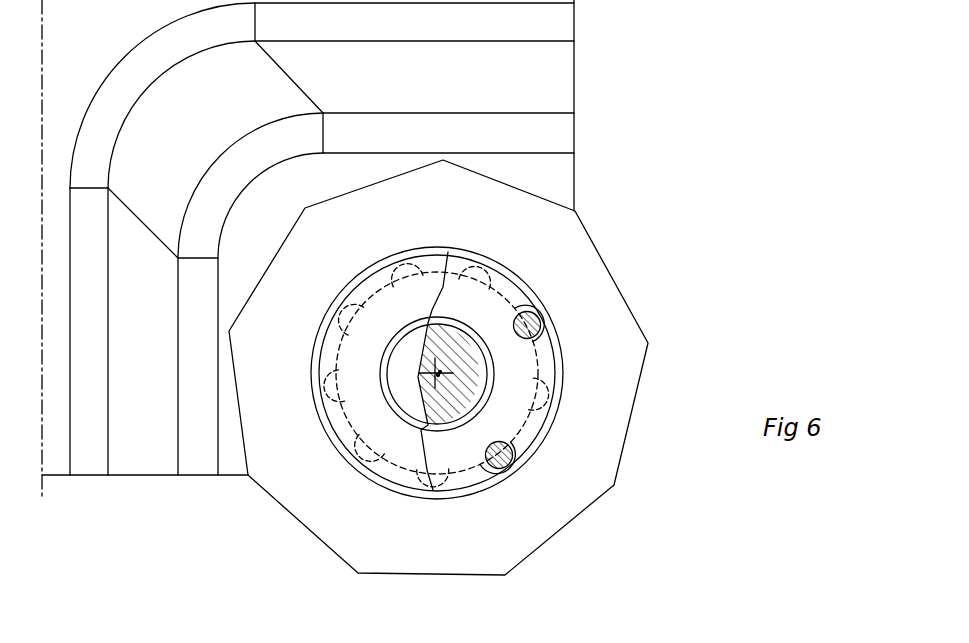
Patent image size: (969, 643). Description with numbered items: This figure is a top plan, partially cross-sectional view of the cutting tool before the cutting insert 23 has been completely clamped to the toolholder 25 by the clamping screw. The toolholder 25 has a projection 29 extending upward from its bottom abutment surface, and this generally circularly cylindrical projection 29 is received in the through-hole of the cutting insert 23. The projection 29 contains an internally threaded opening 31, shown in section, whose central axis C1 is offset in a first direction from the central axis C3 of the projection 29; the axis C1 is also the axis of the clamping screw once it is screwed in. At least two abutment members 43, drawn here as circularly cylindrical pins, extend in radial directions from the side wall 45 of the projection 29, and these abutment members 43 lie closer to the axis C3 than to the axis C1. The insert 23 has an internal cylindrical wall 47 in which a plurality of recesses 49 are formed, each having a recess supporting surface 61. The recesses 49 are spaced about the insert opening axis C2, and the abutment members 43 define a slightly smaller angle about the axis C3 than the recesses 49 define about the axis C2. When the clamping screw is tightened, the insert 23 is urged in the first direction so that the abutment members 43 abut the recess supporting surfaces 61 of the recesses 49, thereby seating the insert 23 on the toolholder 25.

The toolholder 25 is at (540, 81).
The cutting insert 23 is at (546, 224).
The internally threaded opening 31 is at (488, 374).
The projection 29 is at (440, 445).
The abutment members 43 is at (523, 312).
The recess supporting surfaces 61 is at (553, 338).
The side wall 45 is at (538, 363).
The internal cylindrical wall 47 is at (522, 433).
The recesses 49 is at (550, 402).
The central axis of the internally threaded opening C1 is at (435, 373).
The insert opening axis C2 is at (438, 376).
The central axis of the projection C3 is at (526, 394).